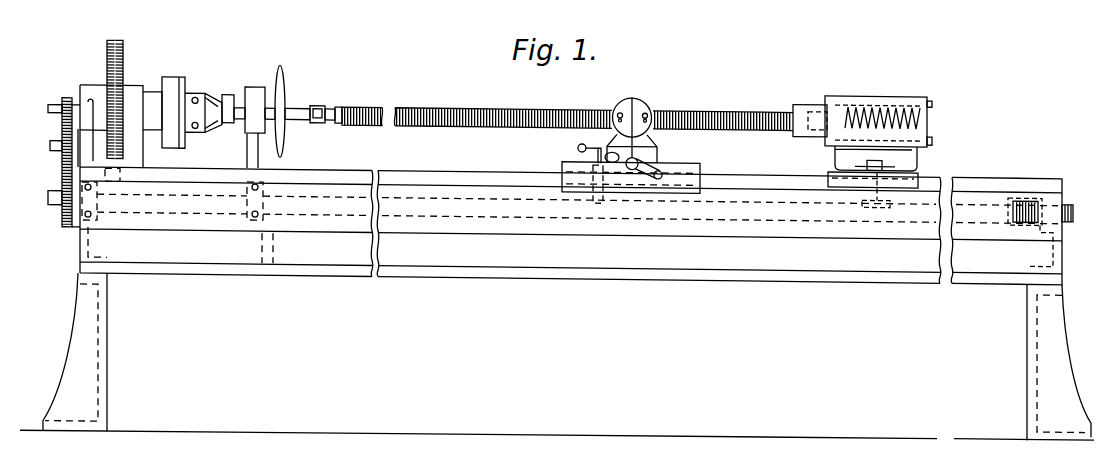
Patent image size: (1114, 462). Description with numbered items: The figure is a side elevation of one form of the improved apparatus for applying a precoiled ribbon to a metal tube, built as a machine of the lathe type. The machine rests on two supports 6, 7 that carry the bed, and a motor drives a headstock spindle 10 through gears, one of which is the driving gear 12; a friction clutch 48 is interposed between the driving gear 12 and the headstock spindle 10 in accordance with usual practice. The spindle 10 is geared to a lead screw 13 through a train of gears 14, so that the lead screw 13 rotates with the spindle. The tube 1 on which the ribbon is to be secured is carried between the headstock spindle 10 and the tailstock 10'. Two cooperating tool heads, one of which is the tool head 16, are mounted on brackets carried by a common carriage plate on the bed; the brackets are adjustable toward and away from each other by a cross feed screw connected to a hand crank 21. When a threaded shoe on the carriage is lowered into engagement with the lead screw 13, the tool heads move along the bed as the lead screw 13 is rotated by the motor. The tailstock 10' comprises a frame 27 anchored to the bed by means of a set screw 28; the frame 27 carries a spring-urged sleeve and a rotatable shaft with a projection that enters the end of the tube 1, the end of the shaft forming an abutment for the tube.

The tube 1 is at (388, 113).
The support 6 is at (108, 359).
The support 7 is at (1027, 365).
The headstock spindle 10 is at (303, 109).
The tailstock 10' is at (876, 109).
The driving gear 12 is at (124, 58).
The lead screw 13 is at (1022, 192).
The train of gears 14 is at (60, 177).
The tool head 16 is at (650, 97).
The hand crank 21 is at (661, 164).
The frame 27 is at (916, 148).
The set screw 28 is at (877, 196).
The friction clutch 48 is at (186, 89).